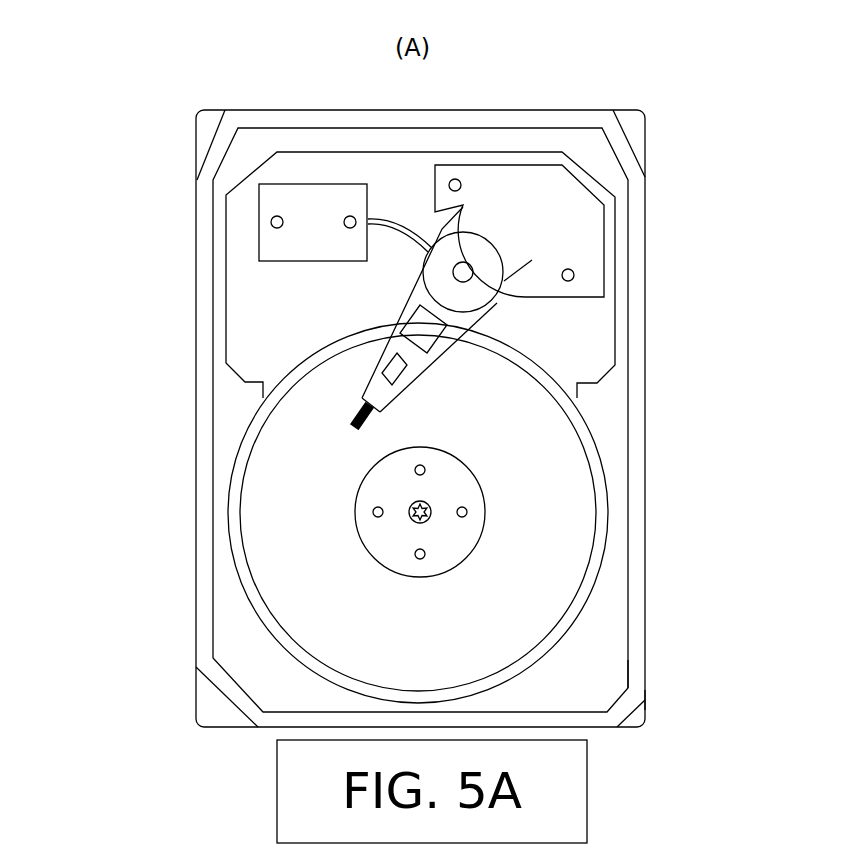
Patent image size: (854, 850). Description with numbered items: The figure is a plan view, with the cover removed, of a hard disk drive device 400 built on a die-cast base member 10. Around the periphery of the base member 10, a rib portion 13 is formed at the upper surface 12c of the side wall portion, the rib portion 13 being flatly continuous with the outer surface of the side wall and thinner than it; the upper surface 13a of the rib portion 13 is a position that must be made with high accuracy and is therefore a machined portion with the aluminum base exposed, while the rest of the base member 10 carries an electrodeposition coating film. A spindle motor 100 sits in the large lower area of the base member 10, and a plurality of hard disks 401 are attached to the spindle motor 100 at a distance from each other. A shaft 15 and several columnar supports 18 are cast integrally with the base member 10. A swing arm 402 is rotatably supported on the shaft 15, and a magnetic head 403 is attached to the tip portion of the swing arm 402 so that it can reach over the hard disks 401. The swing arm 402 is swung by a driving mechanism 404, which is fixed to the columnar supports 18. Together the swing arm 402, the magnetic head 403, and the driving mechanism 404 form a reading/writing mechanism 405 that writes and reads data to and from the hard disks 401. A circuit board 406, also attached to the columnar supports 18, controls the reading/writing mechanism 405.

The hard disk drive device 400 is at (667, 151).
The base member 10 is at (648, 400).
The rib portion 13 is at (207, 627).
The upper surface 12c is at (608, 642).
The upper surface 13a is at (632, 673).
The hard disk 401 is at (577, 509).
The spindle motor 100 is at (452, 549).
The shaft 15 is at (470, 277).
The swing arm 402 is at (408, 305).
The magnetic head 403 is at (355, 410).
The driving mechanism 404 is at (540, 183).
The reading/writing mechanism 405 is at (103, 310).
The circuit board 406 is at (347, 197).
The columnar support 18 is at (344, 216).